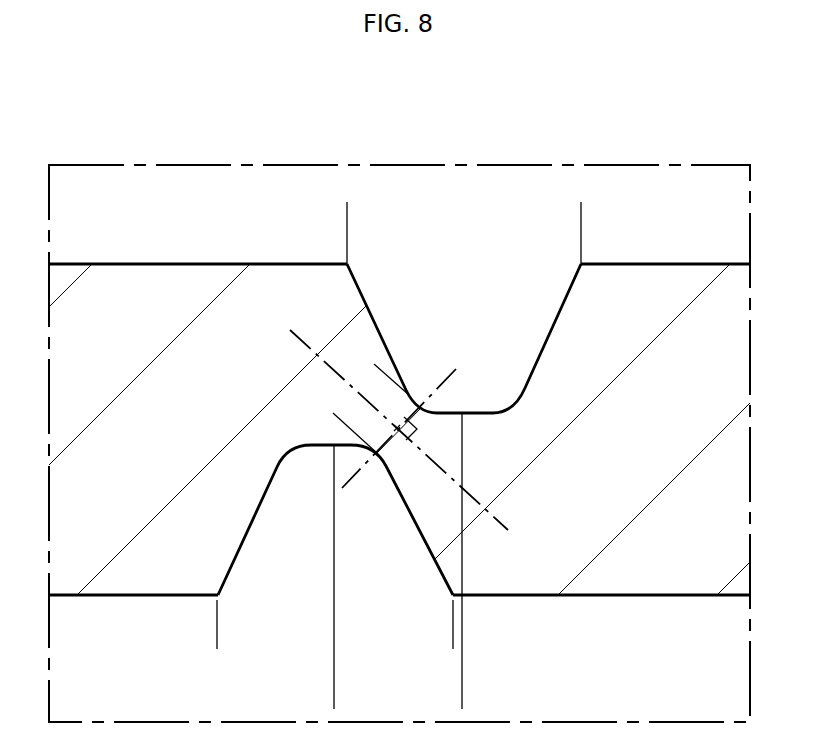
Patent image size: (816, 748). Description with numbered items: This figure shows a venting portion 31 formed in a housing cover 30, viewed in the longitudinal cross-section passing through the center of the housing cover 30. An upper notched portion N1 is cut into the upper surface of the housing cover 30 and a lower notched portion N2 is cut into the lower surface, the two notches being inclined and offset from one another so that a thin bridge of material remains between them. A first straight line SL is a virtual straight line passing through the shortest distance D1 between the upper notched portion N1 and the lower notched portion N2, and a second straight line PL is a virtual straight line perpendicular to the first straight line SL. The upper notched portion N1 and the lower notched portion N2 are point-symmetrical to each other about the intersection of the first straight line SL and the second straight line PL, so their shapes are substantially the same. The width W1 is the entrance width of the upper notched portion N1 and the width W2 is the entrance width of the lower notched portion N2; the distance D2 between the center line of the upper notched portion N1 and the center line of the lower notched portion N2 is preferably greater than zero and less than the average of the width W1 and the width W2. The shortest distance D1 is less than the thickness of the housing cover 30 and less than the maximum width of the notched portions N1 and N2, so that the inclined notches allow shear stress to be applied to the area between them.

The housing cover 30 is at (120, 144).
The venting portion 31 is at (464, 315).
The upper notched portion N1 is at (557, 318).
The lower notched portion N2 is at (248, 531).
The width of the entrance of the upper notched portion W1 is at (581, 209).
The width of the entrance of the lower notched portion W2 is at (453, 641).
The shortest distance between the upper notched portion and the lower notched portio D1 is at (380, 367).
The distance between the center line of the upper notched portion and the center lin D2 is at (334, 702).
The first straight line SL is at (408, 415).
The second straight line PL is at (414, 445).